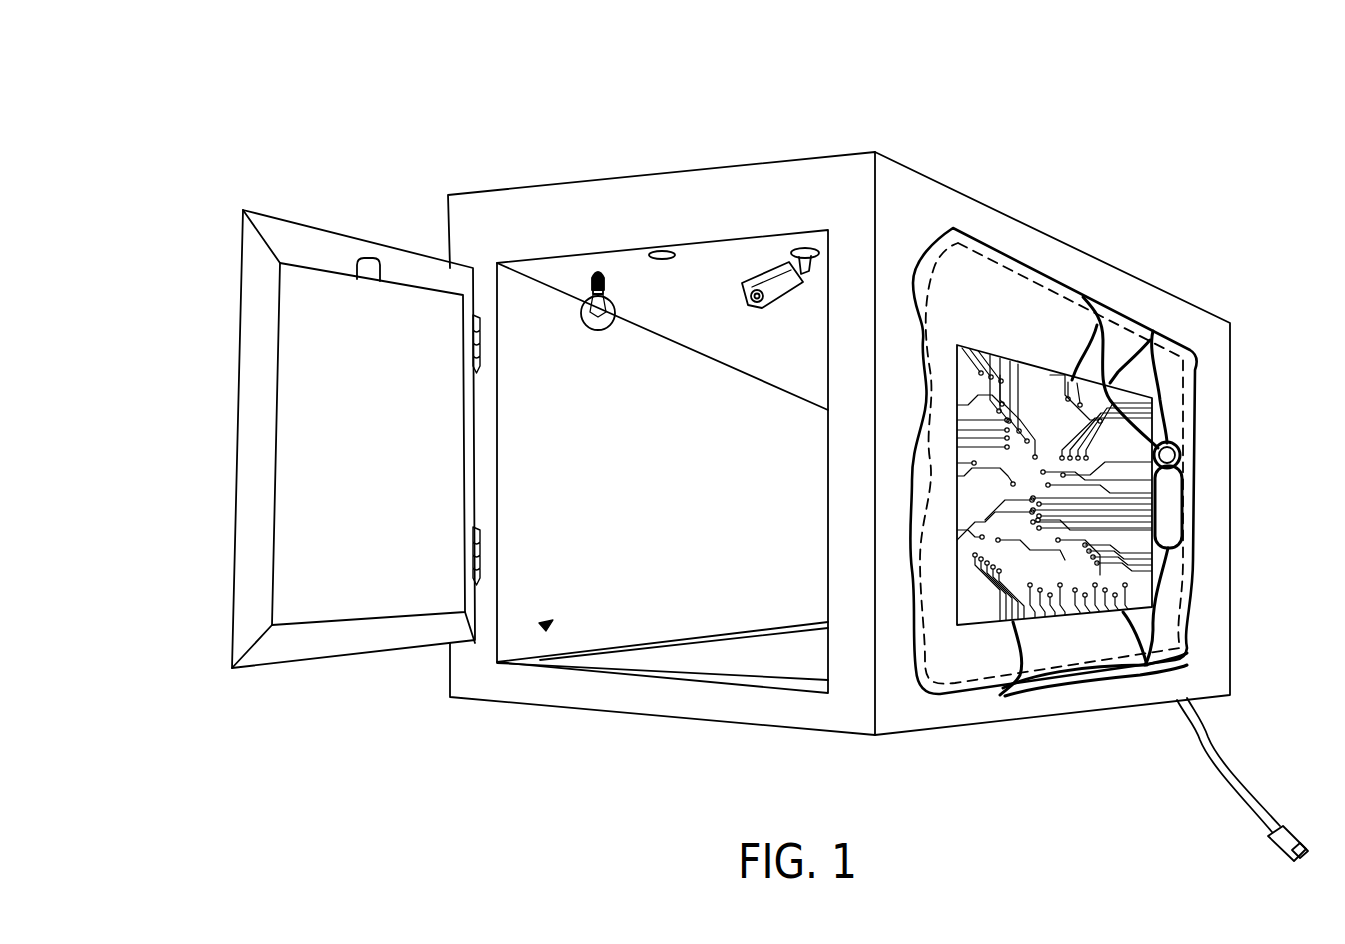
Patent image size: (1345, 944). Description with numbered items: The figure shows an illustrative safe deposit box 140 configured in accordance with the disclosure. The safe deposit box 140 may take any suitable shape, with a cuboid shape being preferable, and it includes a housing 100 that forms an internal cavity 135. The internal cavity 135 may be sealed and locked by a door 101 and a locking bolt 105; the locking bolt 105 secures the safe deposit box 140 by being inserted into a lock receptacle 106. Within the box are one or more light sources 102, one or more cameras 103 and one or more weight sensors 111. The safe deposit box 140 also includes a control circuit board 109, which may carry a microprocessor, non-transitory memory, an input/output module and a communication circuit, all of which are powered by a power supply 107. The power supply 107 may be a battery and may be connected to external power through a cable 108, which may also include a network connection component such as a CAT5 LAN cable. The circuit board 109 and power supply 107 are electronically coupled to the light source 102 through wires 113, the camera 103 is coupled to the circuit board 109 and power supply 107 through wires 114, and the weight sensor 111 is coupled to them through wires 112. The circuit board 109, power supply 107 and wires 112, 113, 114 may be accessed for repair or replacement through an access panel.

The safe deposit box 140 is at (245, 103).
The housing 100 is at (623, 690).
The door 101 is at (238, 432).
The locking bolt 105 is at (370, 258).
The light source 102 is at (598, 270).
The lock receptacle 106 is at (661, 250).
The camera 103 is at (777, 267).
The internal cavity 135 is at (545, 625).
The weight sensor 111 is at (753, 677).
The control circuit board 109 is at (993, 350).
The wires 113 is at (1076, 372).
The wires 114 is at (1153, 333).
The power supply 107 is at (1185, 490).
The wires 112 is at (1030, 690).
The cable 108 is at (1232, 752).